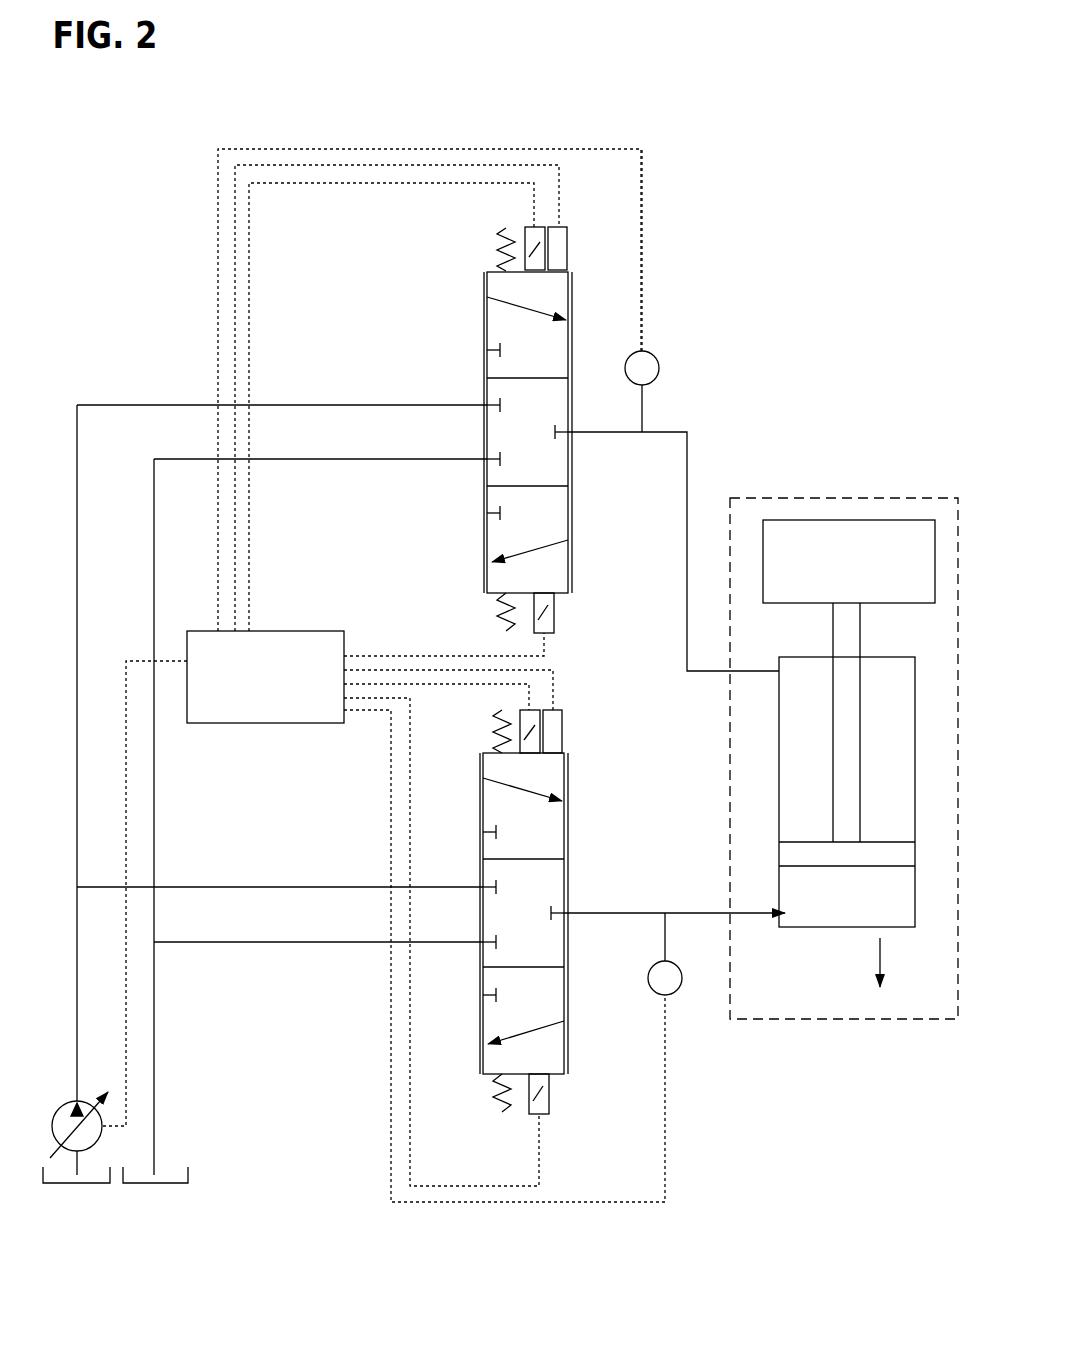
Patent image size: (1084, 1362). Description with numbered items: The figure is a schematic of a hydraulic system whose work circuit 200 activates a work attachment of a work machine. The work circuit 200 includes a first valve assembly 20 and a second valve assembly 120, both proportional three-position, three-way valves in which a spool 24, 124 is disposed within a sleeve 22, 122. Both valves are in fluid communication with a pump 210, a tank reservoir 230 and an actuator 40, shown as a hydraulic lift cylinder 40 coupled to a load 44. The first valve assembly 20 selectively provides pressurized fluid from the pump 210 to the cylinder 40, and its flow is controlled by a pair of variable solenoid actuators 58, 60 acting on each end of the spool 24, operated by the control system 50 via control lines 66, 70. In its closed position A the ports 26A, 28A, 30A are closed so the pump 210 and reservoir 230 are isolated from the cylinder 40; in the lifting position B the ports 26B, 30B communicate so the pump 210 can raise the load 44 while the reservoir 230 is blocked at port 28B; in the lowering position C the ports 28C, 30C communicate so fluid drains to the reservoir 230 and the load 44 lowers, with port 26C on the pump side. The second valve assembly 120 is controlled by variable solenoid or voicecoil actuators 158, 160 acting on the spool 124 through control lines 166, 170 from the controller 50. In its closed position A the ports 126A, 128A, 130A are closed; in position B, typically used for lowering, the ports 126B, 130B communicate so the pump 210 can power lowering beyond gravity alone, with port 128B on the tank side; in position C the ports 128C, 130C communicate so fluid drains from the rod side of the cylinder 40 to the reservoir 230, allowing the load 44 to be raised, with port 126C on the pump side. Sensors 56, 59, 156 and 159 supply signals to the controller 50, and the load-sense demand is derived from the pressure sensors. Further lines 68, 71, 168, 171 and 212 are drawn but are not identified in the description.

The work circuit 200 is at (202, 263).
The second valve assembly 120 is at (526, 423).
The sleeve 122 is at (484, 588).
The spool 124 is at (488, 597).
The port 126A is at (486, 408).
The port 126B is at (487, 297).
The port 126C is at (485, 515).
The port 128A is at (486, 462).
The port 128B is at (487, 348).
The port 128C is at (485, 565).
The port 130A is at (572, 434).
The port 130B is at (568, 322).
The port 130C is at (570, 543).
The sensor 156 is at (652, 353).
The variable solenoid or voicecoil actuator 158 is at (525, 243).
The sensor 159 is at (567, 228).
The variable solenoid or voicecoil actuator 160 is at (555, 630).
The control line 166 is at (387, 185).
The first pressure sensor signal line 168 is at (575, 147).
The control line 170 is at (372, 655).
The first LVDT feedback line 171 is at (560, 194).
The first valve assembly 20 is at (521, 916).
The sleeve 22 is at (479, 1071).
The spool 24 is at (483, 1080).
The port 26A is at (482, 890).
The port 26B is at (483, 778).
The port 26C is at (481, 998).
The port 28A is at (480, 946).
The port 28B is at (483, 830).
The port 28C is at (482, 1048).
The port 30A is at (568, 917).
The port 30B is at (563, 806).
The port 30C is at (567, 1023).
The sensor 56 is at (681, 970).
The variable solenoid actuator 58 is at (521, 722).
The sensor 59 is at (562, 711).
The variable solenoid actuator 60 is at (548, 1115).
The control line 66 is at (468, 685).
The second pressure sensor signal line 68 is at (625, 1200).
The control line 70 is at (488, 1184).
The second LVDT feedback line 71 is at (555, 679).
The actuator 40 is at (840, 720).
The load 44 is at (795, 604).
The control system 50 is at (265, 677).
The pump 210 is at (80, 1103).
The pump control line 212 is at (132, 660).
The tank reservoir 230 is at (190, 1173).
The closed or neutral position A is at (550, 460).
The position B is at (551, 288).
The position C is at (550, 508).